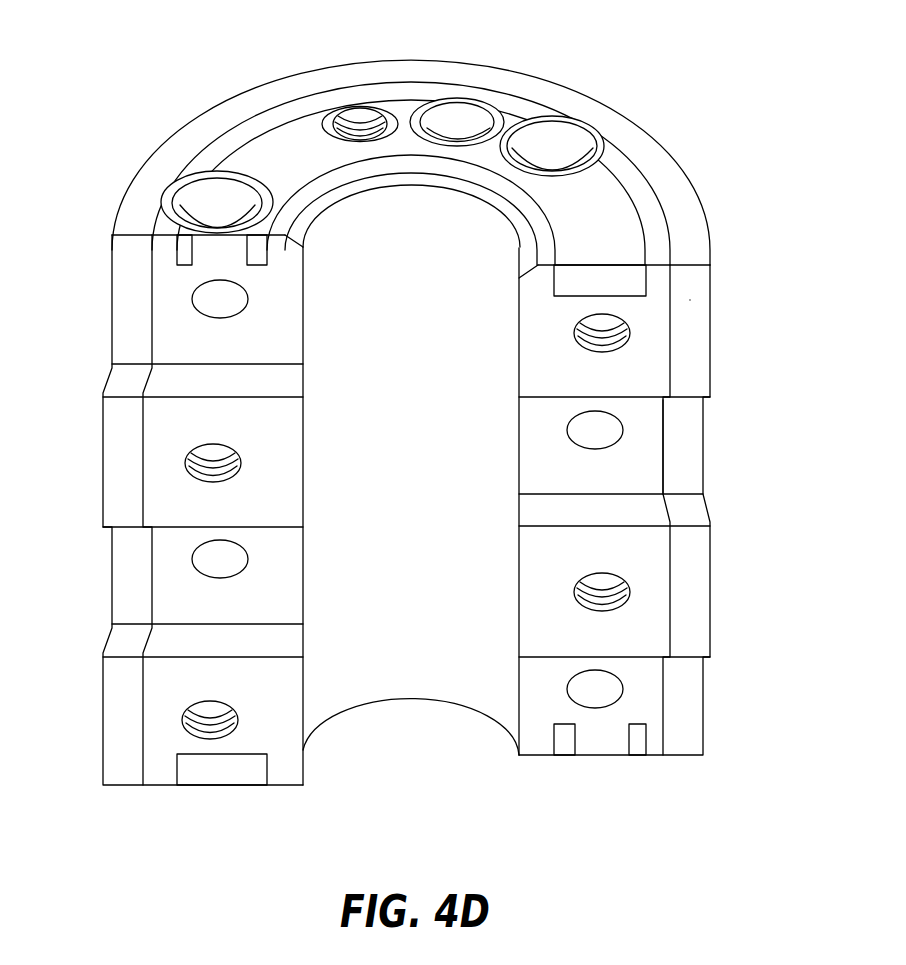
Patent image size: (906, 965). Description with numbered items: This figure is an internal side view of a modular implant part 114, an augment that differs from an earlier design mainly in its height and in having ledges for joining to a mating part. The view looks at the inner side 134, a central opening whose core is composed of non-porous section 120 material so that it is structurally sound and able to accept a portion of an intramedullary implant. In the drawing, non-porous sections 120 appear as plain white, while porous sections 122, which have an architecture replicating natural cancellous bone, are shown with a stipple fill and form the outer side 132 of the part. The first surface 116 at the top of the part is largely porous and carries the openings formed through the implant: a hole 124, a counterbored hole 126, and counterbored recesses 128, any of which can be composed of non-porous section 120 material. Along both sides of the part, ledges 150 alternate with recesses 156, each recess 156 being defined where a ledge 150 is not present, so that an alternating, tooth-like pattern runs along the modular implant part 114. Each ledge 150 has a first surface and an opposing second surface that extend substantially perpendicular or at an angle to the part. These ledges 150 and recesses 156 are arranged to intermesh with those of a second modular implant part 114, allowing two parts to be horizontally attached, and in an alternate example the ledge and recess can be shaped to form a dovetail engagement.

The modular implant part 114 is at (440, 392).
The first surface 116 is at (262, 148).
The non-porous section 120 is at (645, 345).
The porous section 122 is at (690, 290).
The hole 124 is at (360, 110).
The counterbored hole 126 is at (463, 117).
The counterbored recess 128 is at (552, 145).
The outer side 132 is at (708, 219).
The inner side 134 is at (457, 670).
The ledge 150 is at (692, 590).
The recess 156 is at (685, 446).